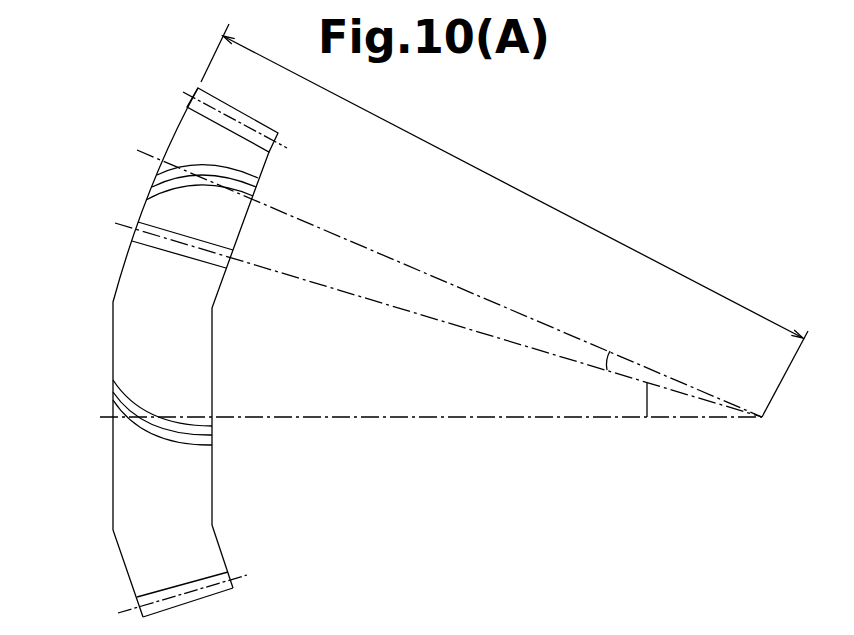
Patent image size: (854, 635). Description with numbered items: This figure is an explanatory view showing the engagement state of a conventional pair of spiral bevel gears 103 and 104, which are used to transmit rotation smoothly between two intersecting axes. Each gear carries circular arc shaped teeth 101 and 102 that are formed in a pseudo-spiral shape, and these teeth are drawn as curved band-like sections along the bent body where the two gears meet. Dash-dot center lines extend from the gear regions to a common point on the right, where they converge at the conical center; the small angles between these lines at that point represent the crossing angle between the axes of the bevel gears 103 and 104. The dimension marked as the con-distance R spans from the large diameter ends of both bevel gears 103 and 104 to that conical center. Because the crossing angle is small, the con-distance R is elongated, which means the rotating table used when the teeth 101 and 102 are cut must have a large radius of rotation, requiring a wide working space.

The circular arc shaped teeth 101 is at (255, 119).
The circular arc shaped teeth 102 is at (113, 384).
The spiral bevel gear 103 is at (241, 230).
The spiral bevel gear 104 is at (213, 343).
The con-distance R is at (504, 220).